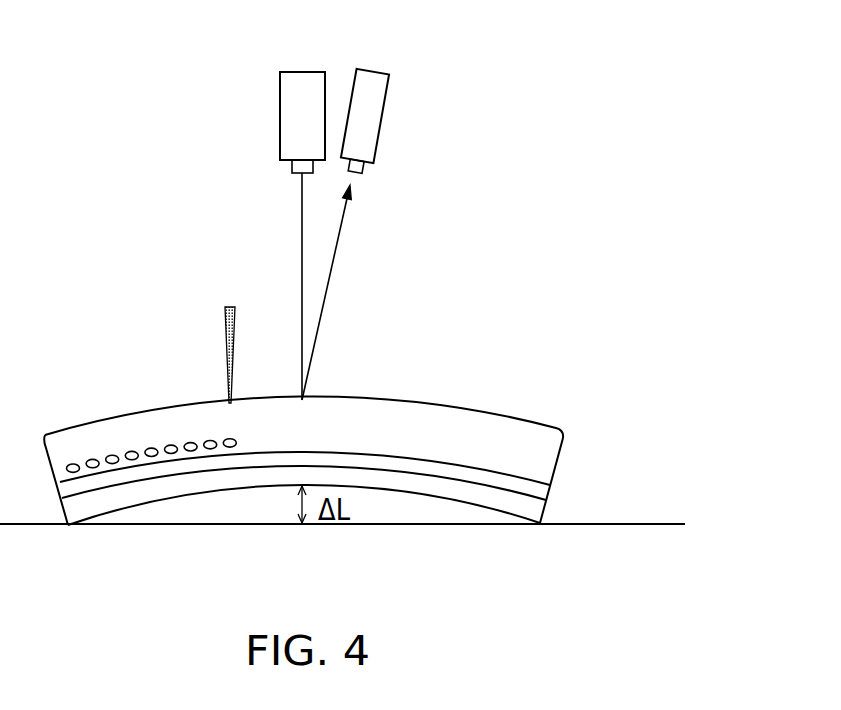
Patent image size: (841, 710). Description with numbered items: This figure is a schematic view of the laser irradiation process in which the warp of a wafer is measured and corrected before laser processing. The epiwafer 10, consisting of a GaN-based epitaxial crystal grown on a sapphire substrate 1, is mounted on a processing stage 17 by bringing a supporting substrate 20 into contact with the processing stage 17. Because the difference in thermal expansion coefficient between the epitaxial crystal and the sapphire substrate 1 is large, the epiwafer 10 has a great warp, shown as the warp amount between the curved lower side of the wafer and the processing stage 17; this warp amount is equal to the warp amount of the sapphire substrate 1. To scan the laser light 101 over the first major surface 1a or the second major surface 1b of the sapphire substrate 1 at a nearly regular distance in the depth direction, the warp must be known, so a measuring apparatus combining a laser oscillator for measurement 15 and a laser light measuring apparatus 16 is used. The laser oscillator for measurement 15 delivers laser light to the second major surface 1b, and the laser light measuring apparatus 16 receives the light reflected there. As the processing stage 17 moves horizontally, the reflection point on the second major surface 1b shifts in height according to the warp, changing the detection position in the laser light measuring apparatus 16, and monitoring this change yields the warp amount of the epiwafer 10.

The sapphire substrate 1 is at (310, 426).
The first major surface 1a is at (65, 482).
The second major surface 1b is at (462, 408).
The epiwafer 10 is at (319, 407).
The laser oscillator for measurement 15 is at (300, 118).
The laser light measuring apparatus 16 is at (363, 117).
The processing stage 17 is at (640, 523).
The supporting substrate 20 is at (507, 493).
The laser light 101 is at (225, 311).